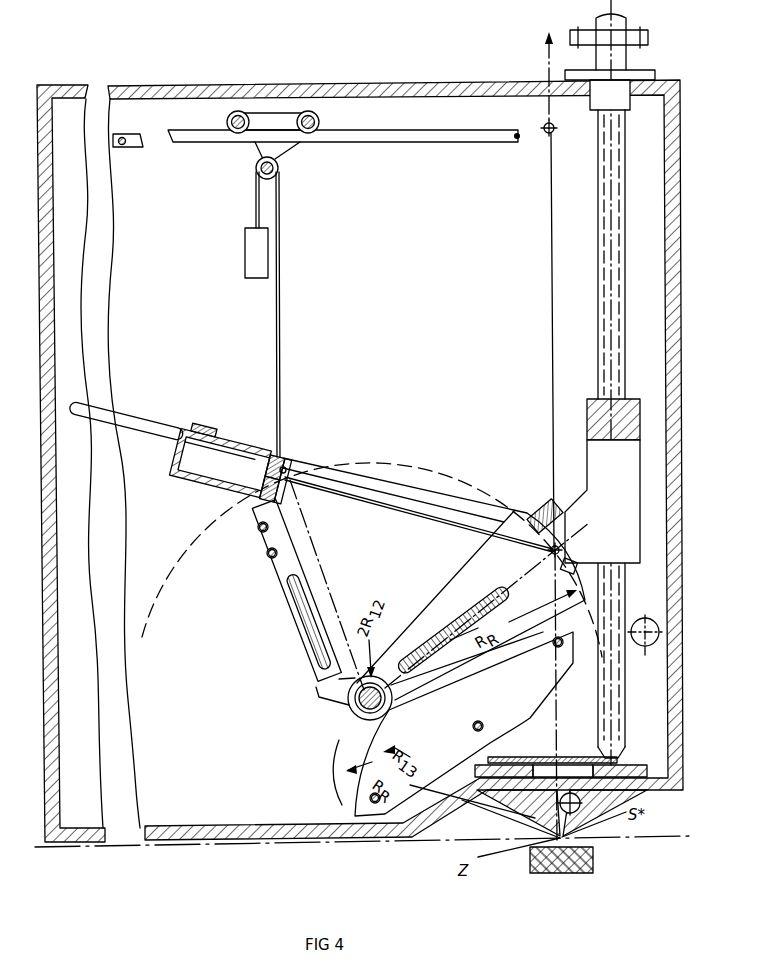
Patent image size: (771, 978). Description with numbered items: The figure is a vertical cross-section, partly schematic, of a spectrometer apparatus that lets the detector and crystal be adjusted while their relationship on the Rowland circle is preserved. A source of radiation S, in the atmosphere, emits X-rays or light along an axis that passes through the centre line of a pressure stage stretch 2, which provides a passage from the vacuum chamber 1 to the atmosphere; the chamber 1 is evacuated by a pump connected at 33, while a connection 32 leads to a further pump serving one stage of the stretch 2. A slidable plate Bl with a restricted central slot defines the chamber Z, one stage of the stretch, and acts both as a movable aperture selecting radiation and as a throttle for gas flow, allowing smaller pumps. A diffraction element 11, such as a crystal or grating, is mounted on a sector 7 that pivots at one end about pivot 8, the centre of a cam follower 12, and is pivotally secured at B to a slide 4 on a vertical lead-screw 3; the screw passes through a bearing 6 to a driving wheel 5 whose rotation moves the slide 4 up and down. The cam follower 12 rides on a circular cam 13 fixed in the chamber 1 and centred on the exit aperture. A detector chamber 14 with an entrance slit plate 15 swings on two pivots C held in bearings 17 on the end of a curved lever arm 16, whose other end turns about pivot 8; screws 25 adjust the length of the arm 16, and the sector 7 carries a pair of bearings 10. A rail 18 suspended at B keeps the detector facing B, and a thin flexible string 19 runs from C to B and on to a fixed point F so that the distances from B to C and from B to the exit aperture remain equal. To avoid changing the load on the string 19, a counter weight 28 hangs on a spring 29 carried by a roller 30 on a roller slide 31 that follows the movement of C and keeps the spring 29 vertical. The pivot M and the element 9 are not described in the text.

The vacuum chamber 1 is at (669, 296).
The pressure stage stretch 2 is at (520, 808).
The lead-screw 3 is at (610, 212).
The slide 4 is at (596, 402).
The driving wheel 5 is at (650, 37).
The bearing 6 is at (640, 78).
The sector 7 is at (490, 555).
The pivot 8 is at (358, 706).
The spring 9 is at (462, 609).
The pair of bearings 10 is at (577, 563).
The diffraction element 11 is at (539, 504).
The cam follower 12 is at (360, 718).
The circular cam 13 is at (360, 790).
The chamber of a radiation detector 14 is at (222, 440).
The slit plate 15 is at (285, 404).
The lever arm 16 is at (279, 588).
The bearings 17 is at (293, 445).
The rail 18 is at (168, 400).
The string 19 is at (551, 244).
The screws 25 is at (260, 531).
The counter weight 28 is at (256, 246).
The spring 29 is at (281, 288).
The roller 30 is at (278, 173).
The roller slide 31 is at (256, 142).
The connection to a vacuum pump 32 is at (578, 812).
The vacuum pump connection 33 is at (645, 647).
The slidable plate Bl is at (518, 757).
The pivot point B is at (567, 544).
The pivots C is at (290, 466).
The fixed point F is at (545, 133).
The pivot M is at (352, 702).
The source of radiation S is at (596, 860).
The chamber Z is at (547, 66).